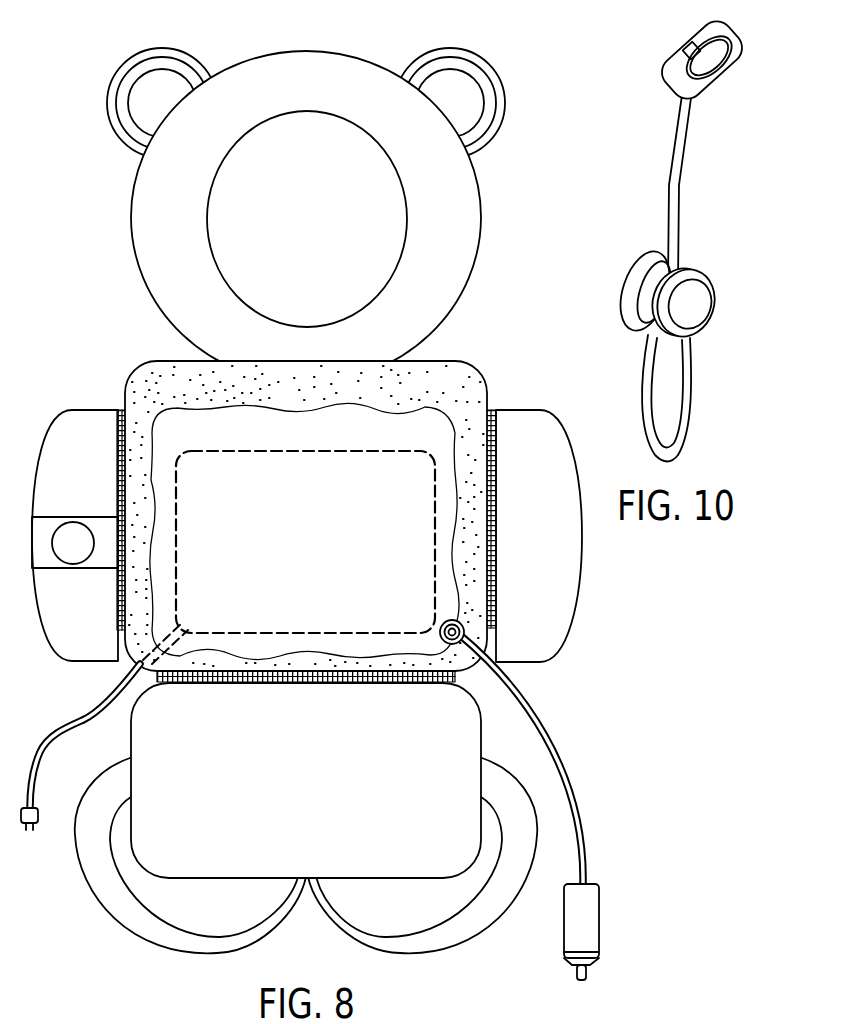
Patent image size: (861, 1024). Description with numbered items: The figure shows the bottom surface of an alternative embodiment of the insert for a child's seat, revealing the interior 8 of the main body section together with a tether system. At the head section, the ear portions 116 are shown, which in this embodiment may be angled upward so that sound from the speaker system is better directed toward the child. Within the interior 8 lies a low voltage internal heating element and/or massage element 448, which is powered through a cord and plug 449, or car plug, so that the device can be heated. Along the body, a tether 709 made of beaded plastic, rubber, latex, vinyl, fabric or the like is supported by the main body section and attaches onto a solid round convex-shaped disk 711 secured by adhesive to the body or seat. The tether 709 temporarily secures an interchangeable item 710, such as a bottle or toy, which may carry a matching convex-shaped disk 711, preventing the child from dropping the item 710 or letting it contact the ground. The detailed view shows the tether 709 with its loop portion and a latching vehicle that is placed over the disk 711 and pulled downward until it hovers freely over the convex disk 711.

In FIG. 8, the interior 8 is at (202, 478).
In FIG. 8, the ear portion 116 is at (145, 68).
In FIG. 8, the low voltage internal heating element and/or massage element 448 is at (187, 425).
In FIG. 8, the cord and plug 449 is at (71, 724).
In FIG. 8, the tether 709 is at (552, 743).
In FIG. 8, the interchangeable item 710 is at (600, 920).
In FIG. 10, the solid round convex-shaped disk 711 is at (713, 70).